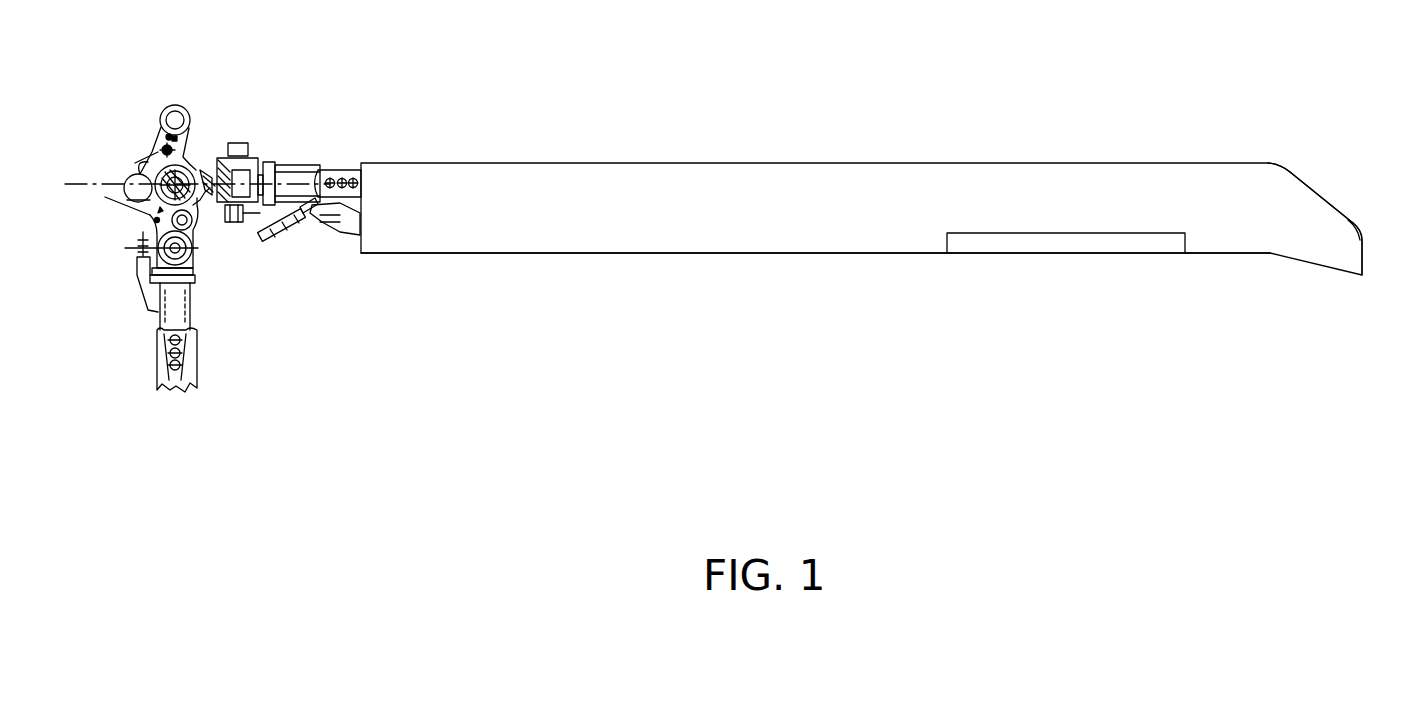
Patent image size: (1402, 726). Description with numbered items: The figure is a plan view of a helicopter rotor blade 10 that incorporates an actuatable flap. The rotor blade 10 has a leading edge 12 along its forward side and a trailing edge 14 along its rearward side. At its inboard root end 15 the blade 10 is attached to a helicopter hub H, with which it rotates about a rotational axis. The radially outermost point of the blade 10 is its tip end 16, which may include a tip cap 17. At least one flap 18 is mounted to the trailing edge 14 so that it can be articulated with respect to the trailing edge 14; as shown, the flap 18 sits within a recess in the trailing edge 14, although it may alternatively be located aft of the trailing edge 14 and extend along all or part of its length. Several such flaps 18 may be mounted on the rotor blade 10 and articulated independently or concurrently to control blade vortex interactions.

The rotor blade 10 is at (872, 248).
The leading edge 12 is at (565, 163).
The trailing edge 14 is at (698, 227).
The root end 15 is at (322, 165).
The tip end 16 is at (1288, 198).
The tip cap 17 is at (1325, 218).
The flap 18 is at (1047, 243).
The helicopter hub H is at (218, 117).